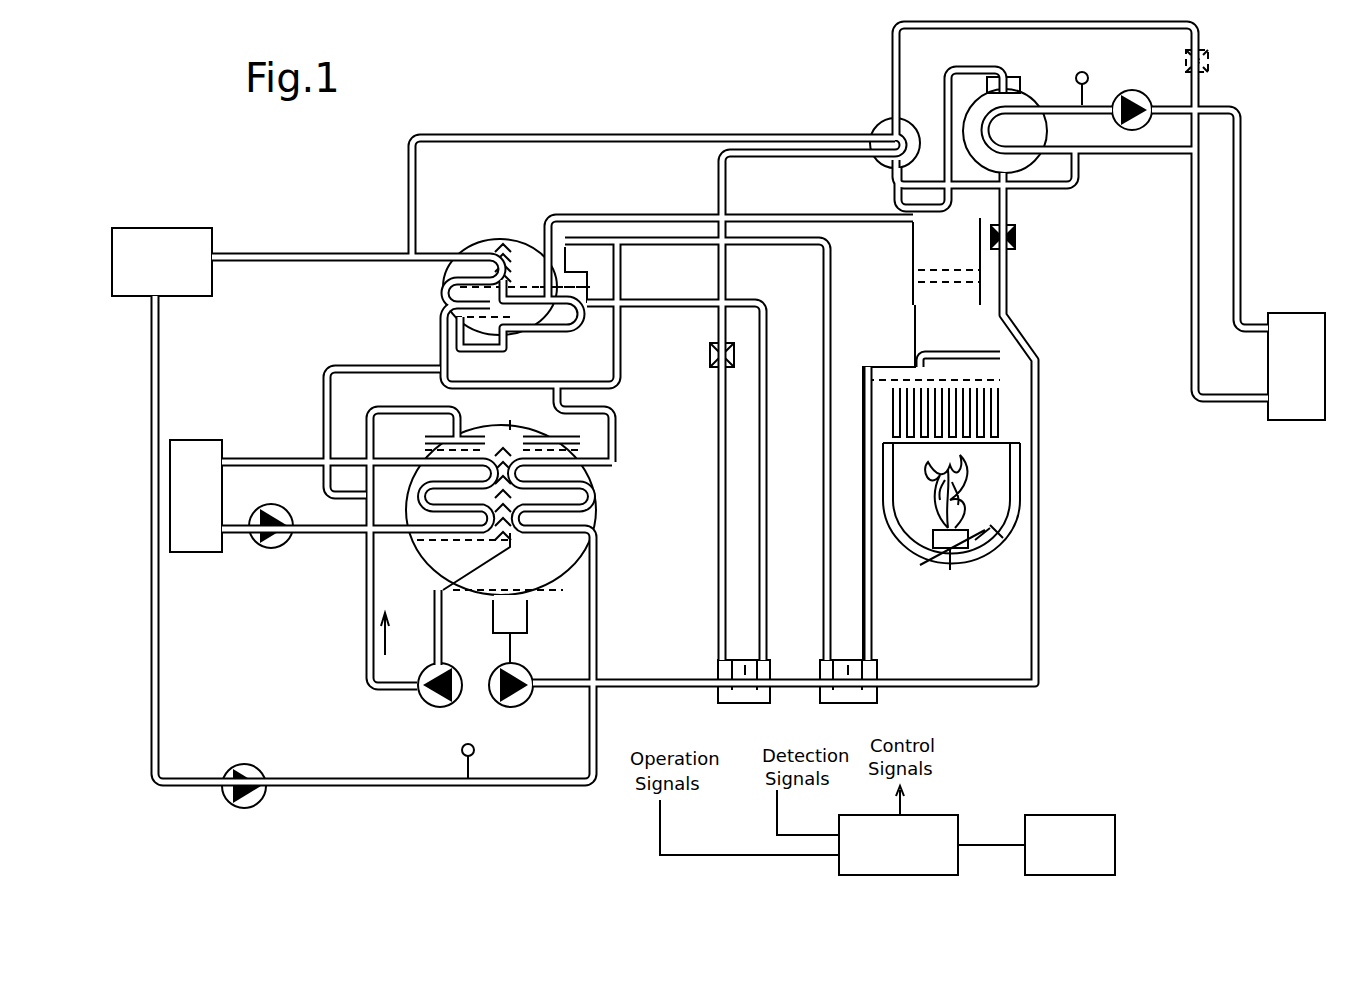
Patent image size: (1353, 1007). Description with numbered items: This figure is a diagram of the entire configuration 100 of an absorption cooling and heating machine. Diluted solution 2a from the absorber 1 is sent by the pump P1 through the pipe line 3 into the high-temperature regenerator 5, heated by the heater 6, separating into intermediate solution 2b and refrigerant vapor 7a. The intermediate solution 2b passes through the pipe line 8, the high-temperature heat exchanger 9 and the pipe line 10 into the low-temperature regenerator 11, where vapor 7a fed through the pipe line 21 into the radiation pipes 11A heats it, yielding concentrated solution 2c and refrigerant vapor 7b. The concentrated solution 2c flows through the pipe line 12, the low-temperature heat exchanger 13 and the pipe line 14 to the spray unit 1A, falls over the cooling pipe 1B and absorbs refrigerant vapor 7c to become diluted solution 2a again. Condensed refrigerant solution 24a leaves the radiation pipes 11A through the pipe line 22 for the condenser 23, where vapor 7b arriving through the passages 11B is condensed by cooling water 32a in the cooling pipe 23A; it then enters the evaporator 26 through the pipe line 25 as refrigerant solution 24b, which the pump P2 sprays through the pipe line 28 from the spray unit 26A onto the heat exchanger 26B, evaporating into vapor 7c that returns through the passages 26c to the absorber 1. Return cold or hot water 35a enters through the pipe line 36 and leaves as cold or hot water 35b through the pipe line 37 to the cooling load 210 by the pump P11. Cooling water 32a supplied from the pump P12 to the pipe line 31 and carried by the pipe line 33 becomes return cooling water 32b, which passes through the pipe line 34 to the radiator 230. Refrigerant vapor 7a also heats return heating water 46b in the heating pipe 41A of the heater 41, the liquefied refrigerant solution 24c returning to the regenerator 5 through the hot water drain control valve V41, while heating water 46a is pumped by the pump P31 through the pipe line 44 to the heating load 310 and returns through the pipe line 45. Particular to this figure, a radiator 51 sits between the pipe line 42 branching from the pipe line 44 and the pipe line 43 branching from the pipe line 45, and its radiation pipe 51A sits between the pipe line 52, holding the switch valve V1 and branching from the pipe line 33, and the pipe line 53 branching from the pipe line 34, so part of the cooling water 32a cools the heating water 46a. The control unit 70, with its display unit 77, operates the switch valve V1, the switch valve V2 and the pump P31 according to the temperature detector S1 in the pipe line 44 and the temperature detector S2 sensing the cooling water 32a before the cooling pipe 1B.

The hot water supply system 100 is at (735, 66).
The absorber 1 is at (598, 555).
The spray unit 1A is at (595, 455).
The cooling pipe 1B is at (600, 495).
The diluted solution 2a is at (900, 378).
The intermediate solution 2b is at (503, 287).
The concentrated solution 2c is at (585, 300).
The pipe line 3 is at (564, 676).
The high-temperature regenerator 5 is at (912, 260).
The heater 6 is at (945, 560).
The refrigerant vapor 7a is at (1010, 85).
The refrigerant vapor 7b is at (475, 255).
The refrigerant vapor 7c is at (430, 484).
The pipe line 8 is at (876, 618).
The high-temperature heat exchanger 9 is at (845, 705).
The pipe line 10 is at (822, 628).
The low-temperature regenerator 11 is at (545, 230).
The radiation pipes 11A is at (535, 240).
The passages 11B is at (497, 240).
The pipe line 12 is at (768, 535).
The low-temperature heat exchanger 13 is at (740, 705).
The pipe line 14 is at (716, 615).
The pipe line 21 is at (780, 215).
The pipe line 22 is at (570, 340).
The condenser 23 is at (445, 262).
The cooling pipe 23A is at (440, 282).
The refrigerant solution 24a is at (462, 325).
The refrigerant solution 24b is at (440, 570).
The refrigerant solution 24c is at (1030, 190).
The pipe line 25 is at (352, 370).
The evaporator 26 is at (455, 410).
The spray unit 26A is at (335, 468).
The heat exchanger 26B is at (410, 555).
The passages 26c is at (500, 440).
The pipe line 28 is at (365, 684).
The pipe line 31 is at (598, 640).
The cooling water 32a is at (375, 772).
The return cooling water 32b is at (272, 252).
The pipe line 33 is at (622, 440).
The pipe line 34 is at (360, 252).
The return cold or hot water 35a is at (322, 545).
The cold or hot water 35b is at (262, 451).
The pipe line 36 is at (362, 538).
The pipe line 37 is at (350, 450).
The heater 41 is at (1040, 95).
The heating pipe 41A is at (1030, 130).
The pipe line 42 is at (890, 80).
The pipe line 43 is at (1075, 175).
The pipe line 44 is at (1243, 245).
The pipe line 45 is at (1190, 305).
The heating water 46a is at (885, 160).
The return heating water 46b is at (1189, 186).
The radiator 51 is at (872, 125).
The radiation pipe 51A is at (918, 120).
The pipe line 52 is at (718, 270).
The pipe line 53 is at (732, 132).
The control unit 70 is at (948, 815).
The display unit 77 is at (1075, 815).
The cooling load 210 is at (200, 438).
The radiator 230 is at (185, 300).
The heating load 310 is at (1285, 422).
The pump P1 is at (528, 700).
The pump P2 is at (430, 705).
The pump P11 is at (260, 548).
The pump P12 is at (243, 764).
The pump P31 is at (1140, 92).
The temperature detector S1 is at (1088, 78).
The temperature detector S2 is at (475, 752).
The switch valve V1 is at (708, 358).
The switch valve V2 is at (1210, 62).
The hot water drain control valve V41 is at (1018, 245).